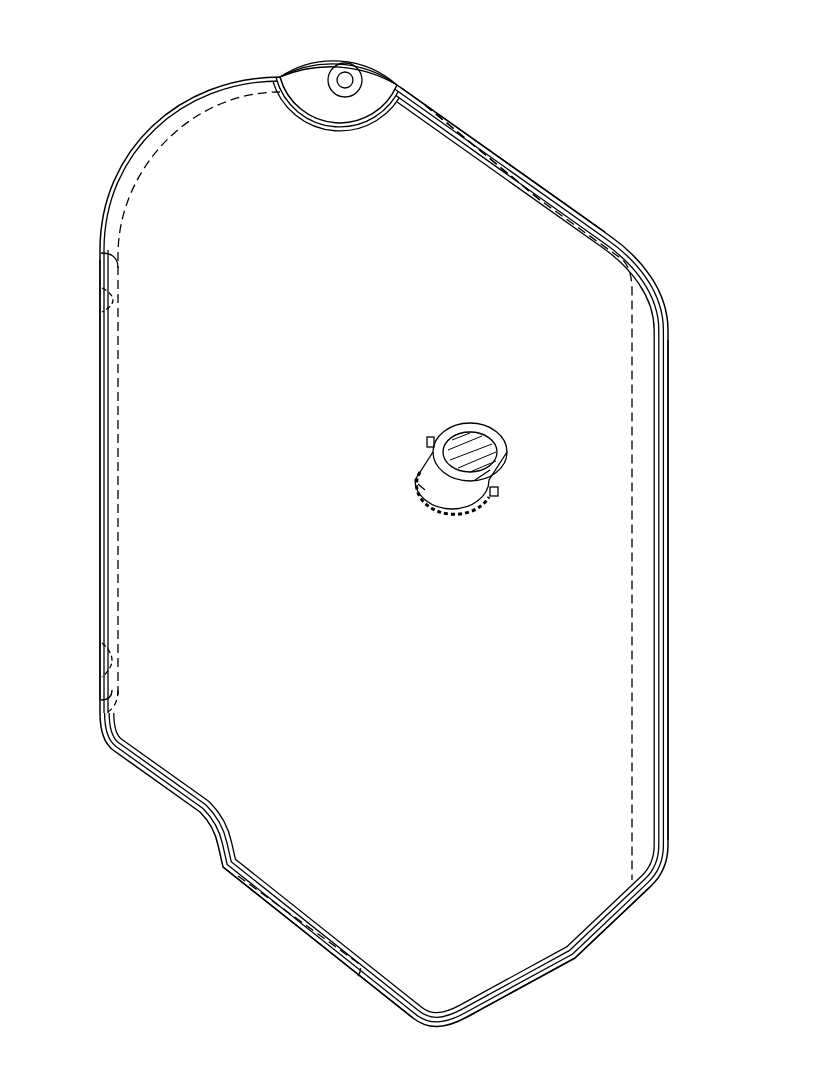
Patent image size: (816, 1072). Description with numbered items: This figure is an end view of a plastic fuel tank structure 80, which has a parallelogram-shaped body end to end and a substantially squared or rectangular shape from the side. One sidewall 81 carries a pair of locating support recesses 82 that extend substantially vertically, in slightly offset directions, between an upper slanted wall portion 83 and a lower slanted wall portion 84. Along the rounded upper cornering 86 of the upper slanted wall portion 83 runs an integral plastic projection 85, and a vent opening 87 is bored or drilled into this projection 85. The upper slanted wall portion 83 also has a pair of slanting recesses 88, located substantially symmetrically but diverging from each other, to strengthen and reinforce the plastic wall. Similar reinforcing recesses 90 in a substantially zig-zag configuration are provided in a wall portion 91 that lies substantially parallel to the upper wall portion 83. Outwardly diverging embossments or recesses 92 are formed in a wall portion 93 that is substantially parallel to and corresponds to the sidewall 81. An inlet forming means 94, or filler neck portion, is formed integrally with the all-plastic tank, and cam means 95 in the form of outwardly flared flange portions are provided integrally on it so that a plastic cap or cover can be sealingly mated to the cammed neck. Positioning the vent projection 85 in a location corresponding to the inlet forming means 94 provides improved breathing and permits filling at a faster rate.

The plastic fuel tank structure 80 is at (108, 745).
The sidewall 81 is at (668, 626).
The locating support recesses 82 is at (630, 715).
The upper slanted wall portion 83 is at (518, 167).
The lower slanted wall portion 84 is at (600, 935).
The integral plastic projection 85 is at (363, 78).
The rounded upper cornering 86 is at (325, 62).
The vent opening 87 is at (344, 86).
The slanting recesses 88 is at (490, 166).
The reinforcing recesses 90 is at (318, 926).
The wall portion 91 is at (380, 988).
The outwardly diverging embossments or recesses 92 is at (120, 388).
The wall portion 93 is at (100, 467).
The inlet forming means 94 is at (430, 456).
The cam means 95 is at (431, 438).